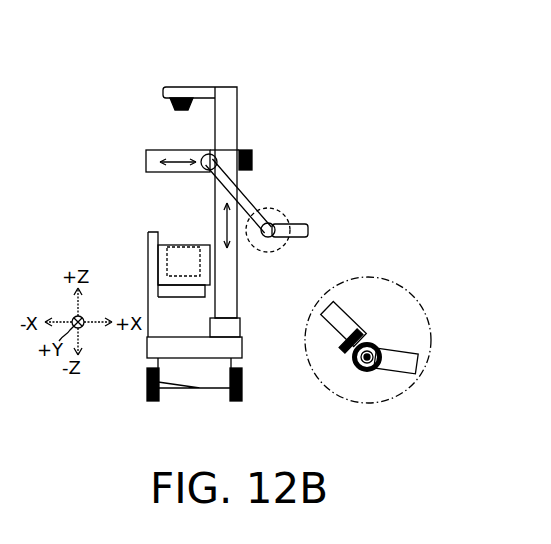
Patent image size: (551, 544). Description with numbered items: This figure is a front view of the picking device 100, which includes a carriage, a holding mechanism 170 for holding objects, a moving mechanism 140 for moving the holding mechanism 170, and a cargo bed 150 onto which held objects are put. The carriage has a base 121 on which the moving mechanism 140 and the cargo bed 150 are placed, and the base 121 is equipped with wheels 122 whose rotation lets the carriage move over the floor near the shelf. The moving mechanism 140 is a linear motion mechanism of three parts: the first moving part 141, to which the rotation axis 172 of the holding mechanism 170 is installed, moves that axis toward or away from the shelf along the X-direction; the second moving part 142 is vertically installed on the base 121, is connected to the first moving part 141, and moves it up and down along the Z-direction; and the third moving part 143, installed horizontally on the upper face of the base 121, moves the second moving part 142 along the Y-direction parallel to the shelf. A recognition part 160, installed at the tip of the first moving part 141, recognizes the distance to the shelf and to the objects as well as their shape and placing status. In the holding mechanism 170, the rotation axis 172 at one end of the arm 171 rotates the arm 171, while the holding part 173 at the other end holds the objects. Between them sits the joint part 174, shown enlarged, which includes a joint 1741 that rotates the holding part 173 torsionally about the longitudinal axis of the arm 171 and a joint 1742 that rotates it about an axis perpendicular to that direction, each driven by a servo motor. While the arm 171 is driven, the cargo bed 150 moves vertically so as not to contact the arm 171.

The picking device 100 is at (246, 69).
The recognition part 160 is at (171, 105).
The moving mechanism 140 is at (76, 145).
The first moving part 141 is at (146, 150).
The second moving part 142 is at (218, 203).
The third moving part 143 is at (222, 332).
The cargo bed 150 is at (180, 243).
The holding mechanism 170 is at (362, 242).
The arm 171 is at (266, 213).
The rotation axis 172 is at (246, 177).
The holding part 173 is at (295, 224).
The joint part 174 is at (309, 230).
The joint 1741 is at (362, 330).
The joint 1742 is at (374, 348).
The base 121 is at (222, 350).
The wheels 122 is at (200, 388).